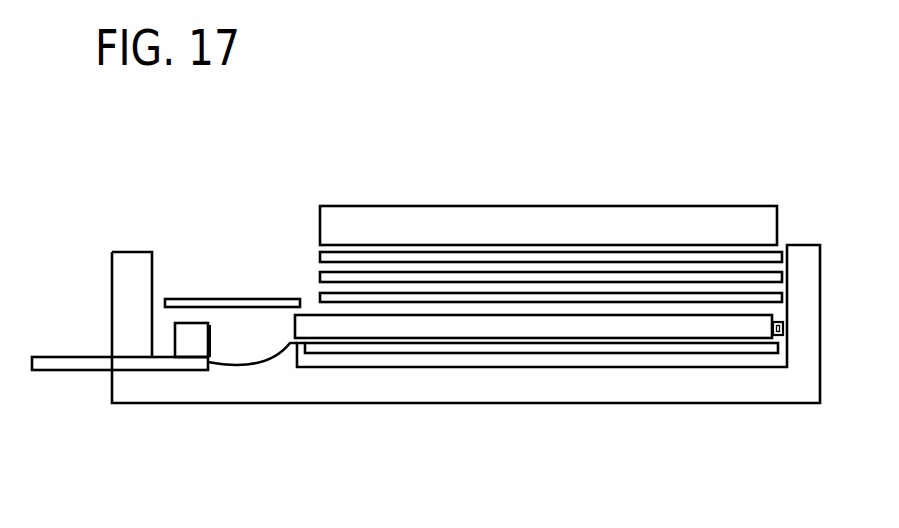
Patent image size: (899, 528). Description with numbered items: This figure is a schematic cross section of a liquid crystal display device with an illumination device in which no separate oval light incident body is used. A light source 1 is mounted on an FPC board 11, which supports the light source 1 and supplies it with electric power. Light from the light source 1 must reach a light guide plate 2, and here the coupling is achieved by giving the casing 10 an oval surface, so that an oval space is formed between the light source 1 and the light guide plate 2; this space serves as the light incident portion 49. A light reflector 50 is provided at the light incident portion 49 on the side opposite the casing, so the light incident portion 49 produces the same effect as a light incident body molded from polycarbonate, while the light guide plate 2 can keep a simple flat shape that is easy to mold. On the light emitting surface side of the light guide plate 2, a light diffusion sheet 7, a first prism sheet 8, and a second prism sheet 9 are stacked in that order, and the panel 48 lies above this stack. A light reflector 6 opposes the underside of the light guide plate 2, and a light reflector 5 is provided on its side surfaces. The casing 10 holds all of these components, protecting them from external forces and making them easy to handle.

The light source 1 is at (183, 323).
The light guide plate 2 is at (342, 325).
The light reflector 5 is at (787, 325).
The light reflector 6 is at (403, 347).
The light diffusion sheet 7 is at (318, 297).
The first prism sheet 8 is at (318, 254).
The second prism sheet 9 is at (778, 247).
The casing 10 is at (653, 387).
The FPC board 11 is at (82, 372).
The liquid crystal panel 48 is at (707, 205).
The light incident portion 49 is at (235, 343).
The light reflector 50 is at (217, 298).